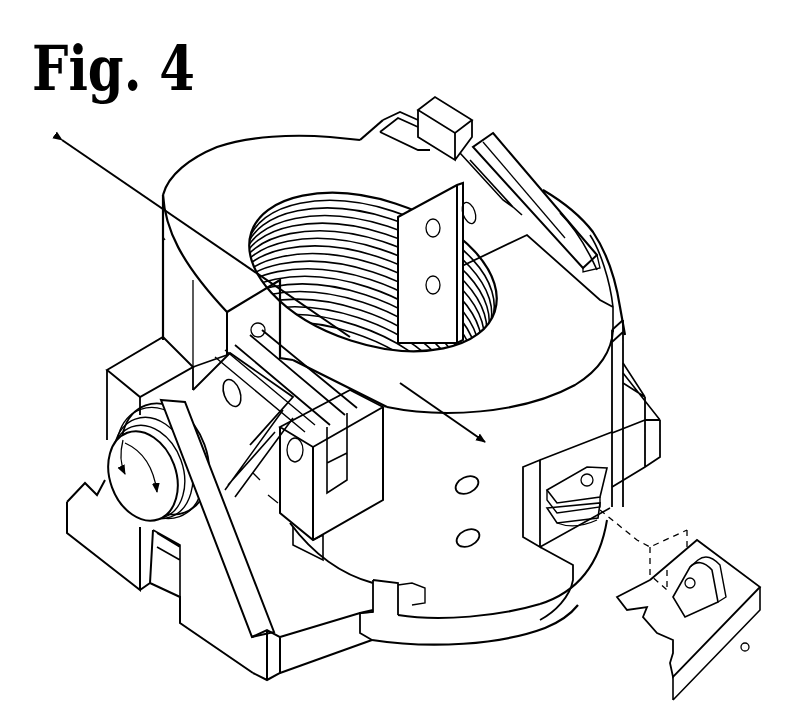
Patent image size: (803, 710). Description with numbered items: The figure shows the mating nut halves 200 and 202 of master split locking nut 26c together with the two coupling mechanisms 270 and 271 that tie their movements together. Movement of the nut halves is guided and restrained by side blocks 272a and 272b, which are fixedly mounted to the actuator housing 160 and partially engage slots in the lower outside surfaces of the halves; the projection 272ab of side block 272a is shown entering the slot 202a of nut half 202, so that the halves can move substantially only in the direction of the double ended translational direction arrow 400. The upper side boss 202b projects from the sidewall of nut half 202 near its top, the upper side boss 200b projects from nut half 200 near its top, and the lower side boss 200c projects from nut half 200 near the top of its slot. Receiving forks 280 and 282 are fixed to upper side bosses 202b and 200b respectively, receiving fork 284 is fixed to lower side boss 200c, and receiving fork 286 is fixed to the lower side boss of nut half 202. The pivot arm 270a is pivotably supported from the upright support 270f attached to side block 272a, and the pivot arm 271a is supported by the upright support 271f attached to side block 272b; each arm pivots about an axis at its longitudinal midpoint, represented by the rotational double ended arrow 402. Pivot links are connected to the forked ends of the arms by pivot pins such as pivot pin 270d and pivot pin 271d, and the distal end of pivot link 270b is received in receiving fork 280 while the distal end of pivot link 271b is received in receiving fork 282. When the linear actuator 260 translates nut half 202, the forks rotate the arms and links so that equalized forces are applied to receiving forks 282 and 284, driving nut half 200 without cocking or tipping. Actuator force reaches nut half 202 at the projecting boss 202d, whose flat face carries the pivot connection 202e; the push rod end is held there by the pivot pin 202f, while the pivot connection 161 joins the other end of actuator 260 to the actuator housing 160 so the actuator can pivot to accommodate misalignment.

The double ended translational direction arrow 400 is at (105, 165).
The mating nut half 200 is at (277, 186).
The upper side boss 200b is at (360, 135).
The lower side boss 200c is at (160, 330).
The mating nut half 202 is at (555, 356).
The slot 202a is at (442, 600).
The upper side boss 202b is at (387, 452).
The projecting boss 202d is at (573, 455).
The pivot connection 202e is at (575, 475).
The pivot pin 202f is at (600, 430).
The linear actuator 260 is at (572, 605).
The coupling mechanism 271 is at (612, 255).
The pivot arm 271a is at (515, 170).
The pivot link 271b is at (403, 113).
The pivot pin 271d is at (440, 183).
The upright support 271f is at (590, 233).
The receiving fork 282 is at (445, 105).
The split locking nut 26c is at (646, 120).
The receiving fork 286 is at (626, 360).
The side block 272b is at (660, 462).
The actuator housing 160 is at (723, 643).
The pivot connection 161 is at (710, 562).
The coupling mechanism 270 is at (95, 272).
The receiving fork 284 is at (137, 368).
The pivot pin 270d is at (233, 378).
The pivot arm 270a is at (262, 432).
The pivot link 270b is at (320, 413).
The receiving fork 280 is at (357, 506).
The rotational double ended arrow 402 is at (120, 432).
The upright support 270f is at (82, 508).
The side block 272a is at (316, 582).
The projection 272ab is at (375, 608).